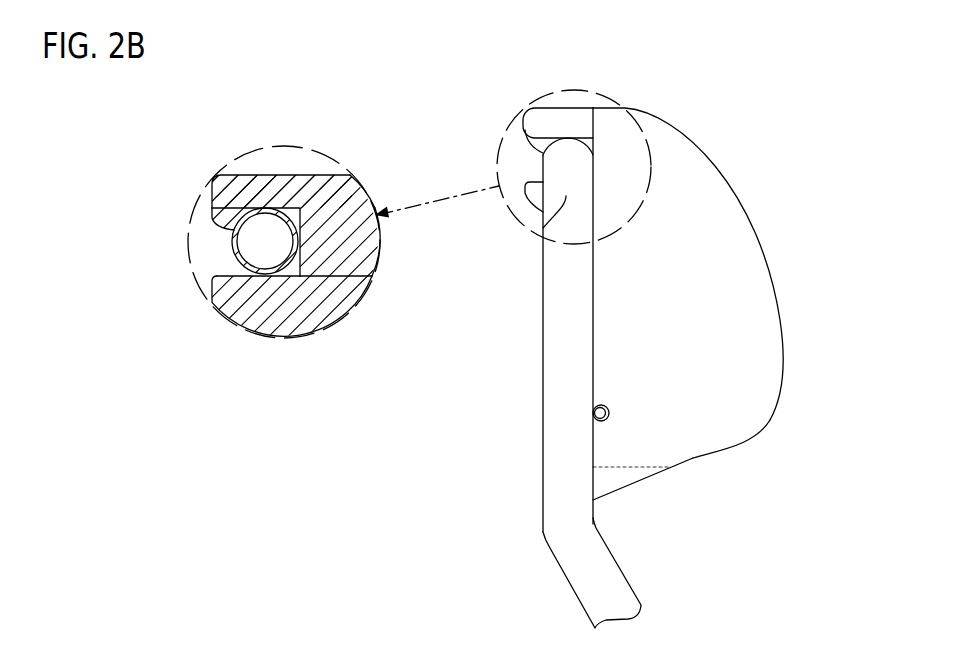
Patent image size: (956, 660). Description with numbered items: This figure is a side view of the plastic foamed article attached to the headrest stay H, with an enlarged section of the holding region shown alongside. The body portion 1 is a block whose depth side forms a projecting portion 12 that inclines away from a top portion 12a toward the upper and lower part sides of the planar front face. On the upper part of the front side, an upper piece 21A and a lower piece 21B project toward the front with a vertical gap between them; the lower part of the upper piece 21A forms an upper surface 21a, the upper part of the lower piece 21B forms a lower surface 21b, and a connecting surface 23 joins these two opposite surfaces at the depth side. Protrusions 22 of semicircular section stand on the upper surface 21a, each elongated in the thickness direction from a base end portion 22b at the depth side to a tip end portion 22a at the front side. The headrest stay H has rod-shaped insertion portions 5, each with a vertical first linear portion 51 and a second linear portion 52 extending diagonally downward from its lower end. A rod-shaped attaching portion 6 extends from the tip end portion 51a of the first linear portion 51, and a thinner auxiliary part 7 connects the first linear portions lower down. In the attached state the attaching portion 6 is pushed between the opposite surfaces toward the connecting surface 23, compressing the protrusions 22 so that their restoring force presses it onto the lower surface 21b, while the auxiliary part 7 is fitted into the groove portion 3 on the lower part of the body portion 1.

The body portion 1 is at (335, 320).
The groove portion 3 is at (609, 413).
The insertion portion 5 is at (592, 368).
The attaching portion 6 is at (232, 243).
The auxiliary part 7 is at (601, 422).
The projecting portion 12 is at (740, 345).
The top portion 12a is at (782, 388).
The upper piece 21A is at (250, 190).
The lower piece 21B is at (233, 303).
The upper surface 21a is at (282, 206).
The lower surface 21b is at (290, 278).
The protrusion 22 is at (210, 184).
The tip end portion 22a is at (212, 217).
The base end portion 22b is at (317, 200).
The connecting surface 23 is at (372, 274).
The first linear portion 51 is at (563, 458).
The tip end portion 51a is at (543, 228).
The second linear portion 52 is at (607, 593).
The headrest stay H is at (562, 382).